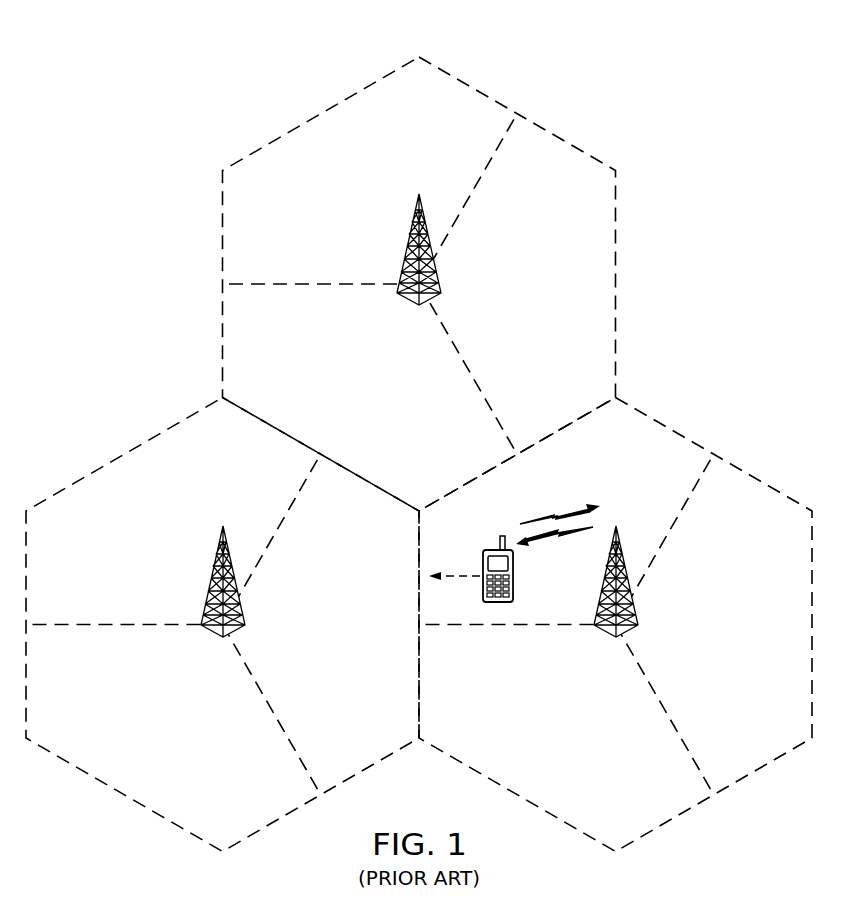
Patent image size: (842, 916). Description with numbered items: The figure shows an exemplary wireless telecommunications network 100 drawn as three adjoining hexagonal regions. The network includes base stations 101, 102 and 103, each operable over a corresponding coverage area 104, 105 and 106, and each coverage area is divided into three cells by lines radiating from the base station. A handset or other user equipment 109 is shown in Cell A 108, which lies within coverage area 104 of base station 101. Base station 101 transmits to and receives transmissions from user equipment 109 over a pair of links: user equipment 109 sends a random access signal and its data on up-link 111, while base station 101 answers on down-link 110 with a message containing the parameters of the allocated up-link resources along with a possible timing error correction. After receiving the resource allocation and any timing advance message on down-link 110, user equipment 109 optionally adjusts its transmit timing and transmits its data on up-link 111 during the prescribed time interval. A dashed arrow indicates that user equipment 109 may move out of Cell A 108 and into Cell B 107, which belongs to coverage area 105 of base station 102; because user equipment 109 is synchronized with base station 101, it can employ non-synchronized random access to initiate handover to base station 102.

The wireless telecommunications network 100 is at (225, 68).
The base station 101 is at (637, 611).
The base station 102 is at (208, 578).
The base station 103 is at (406, 247).
The coverage area 104 is at (665, 831).
The coverage area 105 is at (171, 831).
The coverage area 106 is at (554, 125).
The Cell B 107 is at (360, 655).
The Cell A 108 is at (634, 486).
The user equipment 109 is at (497, 548).
The down-link 110 is at (560, 545).
The up-link 111 is at (548, 516).